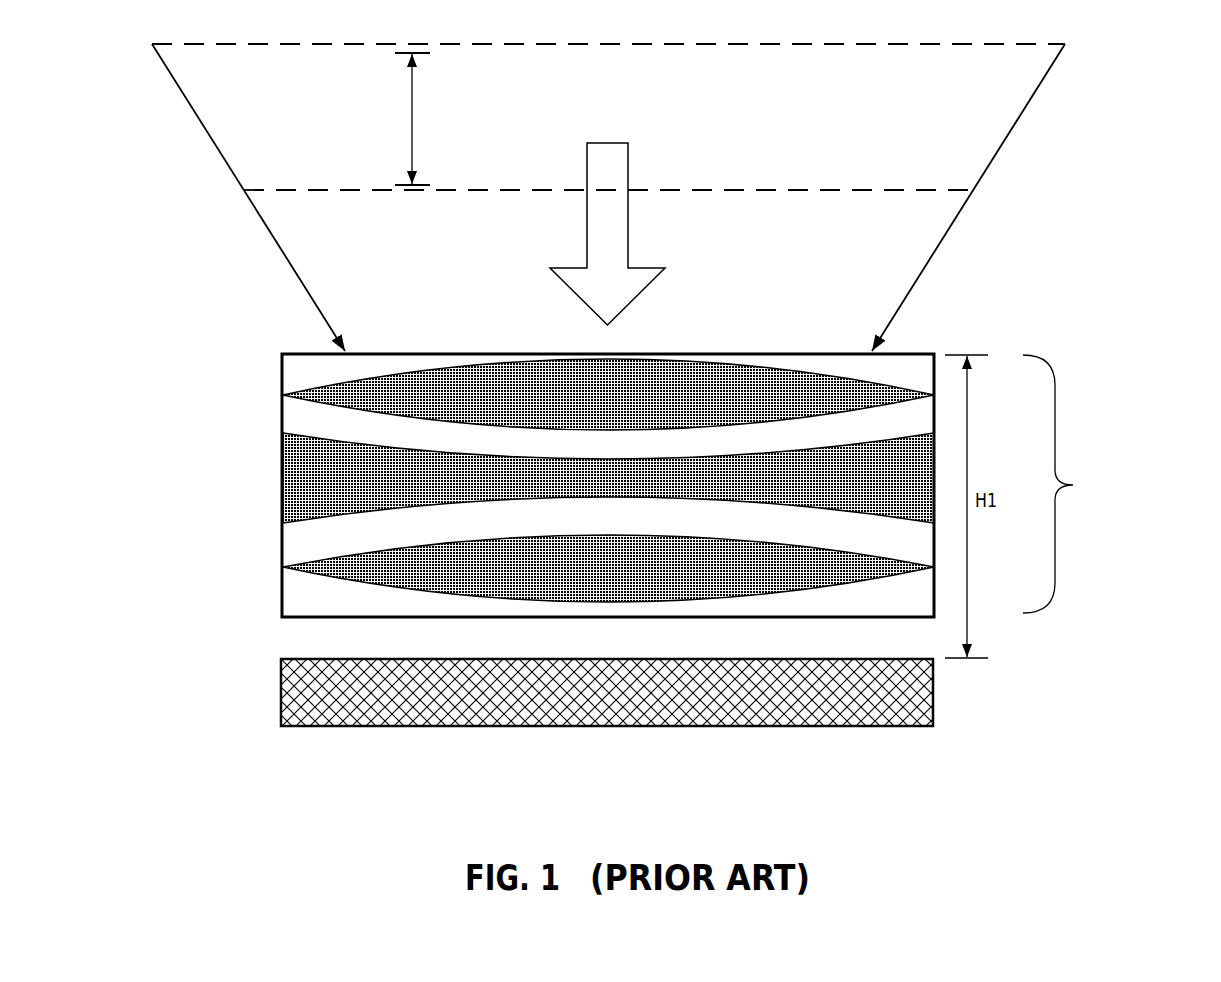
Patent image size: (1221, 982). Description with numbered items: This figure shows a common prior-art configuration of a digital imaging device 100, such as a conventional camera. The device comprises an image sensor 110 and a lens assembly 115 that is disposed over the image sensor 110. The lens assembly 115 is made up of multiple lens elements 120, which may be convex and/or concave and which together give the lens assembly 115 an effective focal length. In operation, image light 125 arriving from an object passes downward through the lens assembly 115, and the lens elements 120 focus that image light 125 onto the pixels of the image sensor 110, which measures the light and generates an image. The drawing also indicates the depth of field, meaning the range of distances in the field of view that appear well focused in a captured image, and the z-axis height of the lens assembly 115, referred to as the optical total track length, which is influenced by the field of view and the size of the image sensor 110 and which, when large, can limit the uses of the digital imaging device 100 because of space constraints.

The digital imaging device 100 is at (197, 279).
The image sensor 110 is at (933, 698).
The lens assembly 115 is at (735, 485).
The lens elements 120 is at (302, 400).
The image light 125 is at (610, 217).